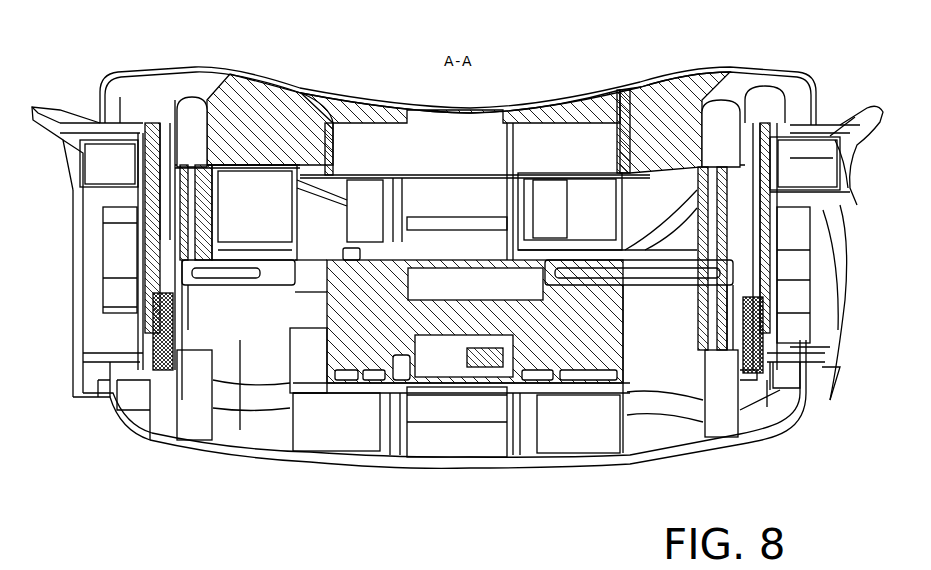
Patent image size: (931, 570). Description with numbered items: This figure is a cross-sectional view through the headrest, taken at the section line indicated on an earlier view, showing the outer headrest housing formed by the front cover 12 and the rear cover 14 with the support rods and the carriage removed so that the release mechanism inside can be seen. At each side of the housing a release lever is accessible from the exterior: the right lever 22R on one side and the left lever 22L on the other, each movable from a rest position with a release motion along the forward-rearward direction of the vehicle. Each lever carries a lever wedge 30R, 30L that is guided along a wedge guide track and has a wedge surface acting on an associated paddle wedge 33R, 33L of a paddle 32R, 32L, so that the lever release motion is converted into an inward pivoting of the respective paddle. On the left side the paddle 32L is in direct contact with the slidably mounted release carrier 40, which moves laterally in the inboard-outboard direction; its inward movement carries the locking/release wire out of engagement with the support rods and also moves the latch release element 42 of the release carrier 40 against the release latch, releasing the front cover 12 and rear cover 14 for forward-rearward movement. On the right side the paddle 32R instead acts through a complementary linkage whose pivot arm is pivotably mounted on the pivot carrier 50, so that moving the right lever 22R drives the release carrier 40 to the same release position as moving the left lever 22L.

The front cover 12 is at (557, 110).
The rear cover 14 is at (373, 490).
The right lever 22R is at (83, 327).
The left lever 22L is at (817, 330).
The lever wedge 30R is at (150, 267).
The lever wedge 30L is at (813, 250).
The paddle 32R is at (180, 182).
The paddle 32L is at (737, 194).
The paddle wedge 33R is at (170, 212).
The paddle wedge 33L is at (748, 250).
The release carrier 40 is at (560, 357).
The latch release element 42 is at (483, 360).
The pivot carrier 50 is at (285, 270).